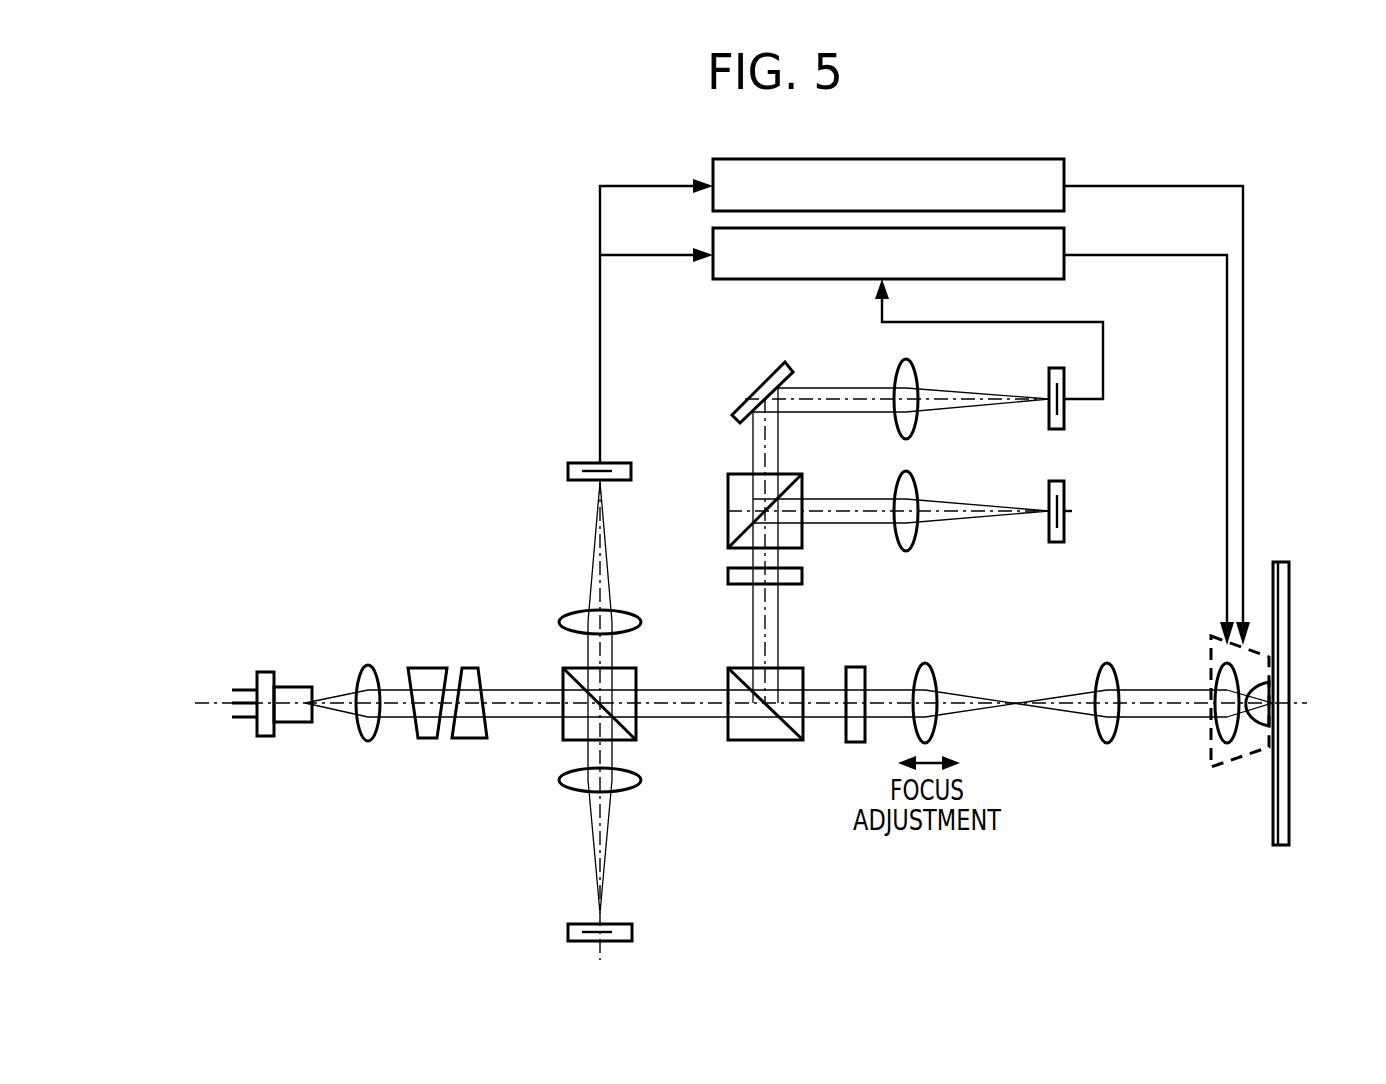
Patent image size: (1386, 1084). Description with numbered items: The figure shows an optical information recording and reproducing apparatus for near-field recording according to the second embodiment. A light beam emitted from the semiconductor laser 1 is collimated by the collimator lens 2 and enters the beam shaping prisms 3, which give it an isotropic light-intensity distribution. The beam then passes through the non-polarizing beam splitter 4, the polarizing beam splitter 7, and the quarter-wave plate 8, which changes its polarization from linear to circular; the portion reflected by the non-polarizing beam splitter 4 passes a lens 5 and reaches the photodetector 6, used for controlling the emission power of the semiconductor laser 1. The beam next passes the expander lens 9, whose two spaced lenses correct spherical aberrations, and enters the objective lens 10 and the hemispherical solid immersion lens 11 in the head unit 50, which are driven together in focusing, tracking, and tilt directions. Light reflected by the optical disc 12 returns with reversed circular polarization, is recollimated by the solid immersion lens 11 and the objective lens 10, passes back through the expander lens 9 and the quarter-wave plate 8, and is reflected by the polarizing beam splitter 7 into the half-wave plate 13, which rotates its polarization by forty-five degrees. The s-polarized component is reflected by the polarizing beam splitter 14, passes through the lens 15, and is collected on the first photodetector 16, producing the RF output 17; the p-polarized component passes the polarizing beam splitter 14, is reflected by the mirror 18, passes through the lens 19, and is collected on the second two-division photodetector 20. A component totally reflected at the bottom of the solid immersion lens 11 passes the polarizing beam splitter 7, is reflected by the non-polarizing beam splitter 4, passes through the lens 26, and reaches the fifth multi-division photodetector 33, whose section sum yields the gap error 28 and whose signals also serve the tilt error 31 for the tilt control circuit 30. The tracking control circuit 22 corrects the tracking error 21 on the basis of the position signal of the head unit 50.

The semiconductor laser 1 is at (268, 672).
The collimator lens 2 is at (369, 665).
The beam shaping prisms 3 is at (472, 668).
The non-polarizing beam splitter 4 is at (636, 676).
The condenser lens 5 is at (641, 780).
The photodetector (LPC-PD) 6 is at (632, 928).
The polarizing beam splitter 7 is at (755, 742).
The quarter-wave plate 8 is at (854, 667).
The expander lens 9 is at (917, 654).
The objective lens 10 is at (1217, 738).
The solid immersion lens 11 is at (1264, 661).
The optical disc 12 is at (1278, 846).
The half-wave plate 13 is at (803, 578).
The polarizing beam splitter 14 is at (728, 502).
The lens 15 is at (915, 484).
The first photodetector (PD1) 16 is at (1049, 485).
The RF output 17 is at (1134, 520).
The mirror 18 is at (755, 388).
The lens 19 is at (915, 371).
The second two-division photodetector (PD2) 20 is at (1049, 372).
The tracking error 21 is at (1047, 378).
The tracking control circuit 22 is at (1066, 233).
The lens 26 is at (641, 622).
The gap error 28 is at (563, 325).
The tilt control circuit 30 is at (1066, 163).
The tilt error 31 is at (563, 321).
The fifth multi-division photodetector (PD5) 33 is at (631, 470).
The head unit 50 is at (1239, 762).